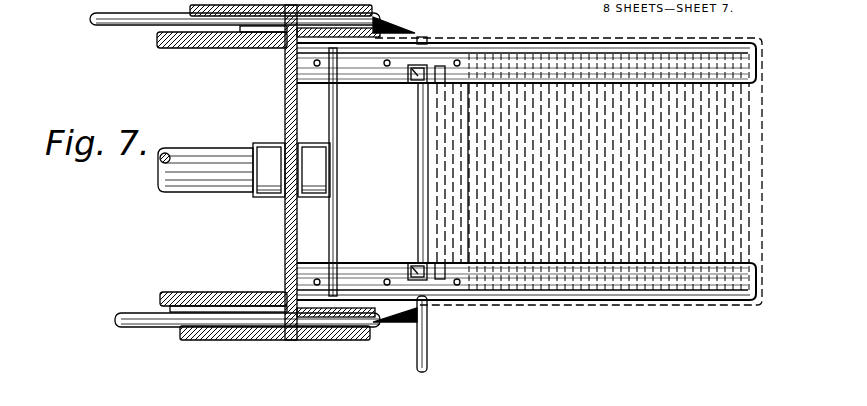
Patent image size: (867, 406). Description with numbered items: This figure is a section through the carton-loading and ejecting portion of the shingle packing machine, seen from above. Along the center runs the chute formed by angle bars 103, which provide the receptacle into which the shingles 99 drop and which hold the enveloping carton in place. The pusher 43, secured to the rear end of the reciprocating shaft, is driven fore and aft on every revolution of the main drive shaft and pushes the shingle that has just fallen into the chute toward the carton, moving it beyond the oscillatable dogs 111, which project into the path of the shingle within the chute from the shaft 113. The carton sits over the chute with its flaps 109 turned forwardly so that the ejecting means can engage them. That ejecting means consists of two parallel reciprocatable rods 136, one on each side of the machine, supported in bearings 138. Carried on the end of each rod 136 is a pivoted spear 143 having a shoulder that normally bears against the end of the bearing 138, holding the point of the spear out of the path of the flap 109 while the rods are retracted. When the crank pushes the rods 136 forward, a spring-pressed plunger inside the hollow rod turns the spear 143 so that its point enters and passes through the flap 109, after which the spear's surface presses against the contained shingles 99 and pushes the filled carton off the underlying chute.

The pusher 43 is at (357, 201).
The shingles 99 is at (593, 173).
The angle bars 103 is at (756, 88).
The carton flap 109 is at (442, 38).
The oscillatable dog 111 is at (423, 80).
The shaft 113 is at (421, 153).
The reciprocatable rods 136 is at (131, 27).
The bearing 138 is at (278, 49).
The spear 143 is at (393, 27).